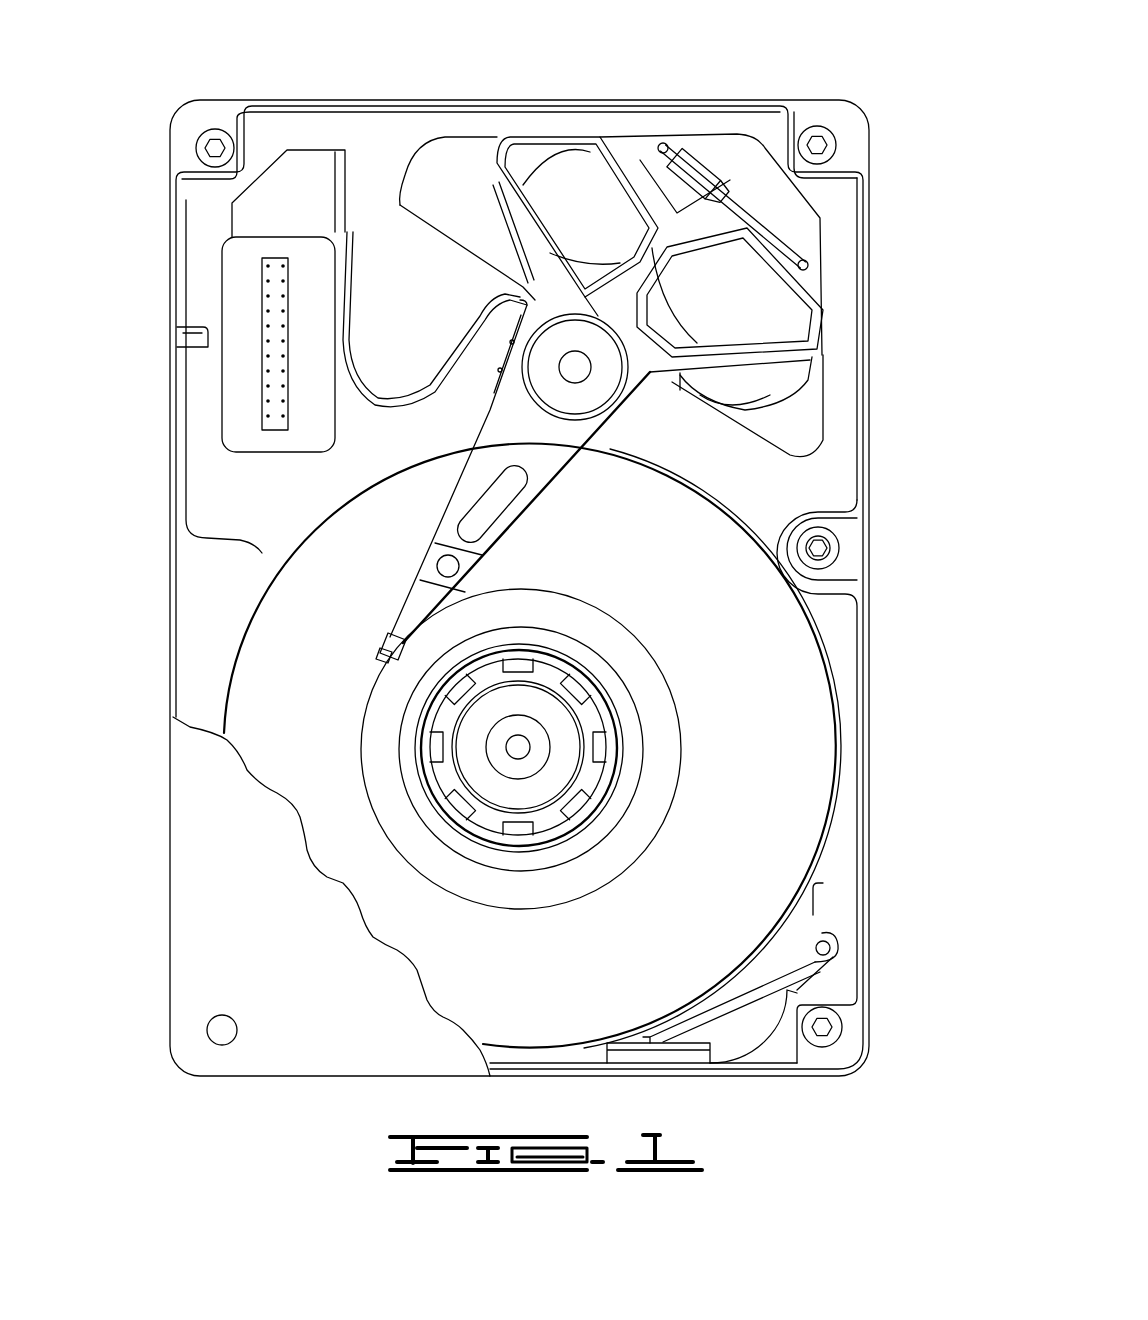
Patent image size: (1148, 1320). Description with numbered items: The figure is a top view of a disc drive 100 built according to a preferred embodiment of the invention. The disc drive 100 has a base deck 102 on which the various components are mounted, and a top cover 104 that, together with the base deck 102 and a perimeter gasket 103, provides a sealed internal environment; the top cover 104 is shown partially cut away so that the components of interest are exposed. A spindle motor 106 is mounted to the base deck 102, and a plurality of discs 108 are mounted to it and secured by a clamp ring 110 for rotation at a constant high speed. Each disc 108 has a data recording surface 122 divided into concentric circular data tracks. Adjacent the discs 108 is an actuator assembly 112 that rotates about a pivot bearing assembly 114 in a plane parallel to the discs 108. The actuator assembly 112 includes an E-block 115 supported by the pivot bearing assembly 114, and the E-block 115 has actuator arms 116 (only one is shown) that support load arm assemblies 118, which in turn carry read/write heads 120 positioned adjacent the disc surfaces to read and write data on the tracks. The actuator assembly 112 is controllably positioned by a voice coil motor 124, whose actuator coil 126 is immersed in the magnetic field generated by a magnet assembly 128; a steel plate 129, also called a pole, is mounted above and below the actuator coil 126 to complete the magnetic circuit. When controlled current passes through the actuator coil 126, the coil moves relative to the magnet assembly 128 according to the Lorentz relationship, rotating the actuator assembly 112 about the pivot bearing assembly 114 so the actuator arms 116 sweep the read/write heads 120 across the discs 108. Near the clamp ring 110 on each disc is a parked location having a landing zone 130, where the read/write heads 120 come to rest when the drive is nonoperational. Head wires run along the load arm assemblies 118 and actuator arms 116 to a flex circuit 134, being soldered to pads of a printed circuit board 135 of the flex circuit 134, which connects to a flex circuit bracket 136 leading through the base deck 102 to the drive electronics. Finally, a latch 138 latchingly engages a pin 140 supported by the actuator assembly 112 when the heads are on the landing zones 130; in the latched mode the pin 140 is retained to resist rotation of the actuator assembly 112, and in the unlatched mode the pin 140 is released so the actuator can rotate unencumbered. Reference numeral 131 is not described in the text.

The disc drive 100 is at (285, 80).
The base deck 102 is at (230, 470).
The perimeter gasket 103 is at (862, 375).
The top cover 104 is at (200, 872).
The spindle motor 106 is at (565, 738).
The discs 108 is at (808, 713).
The clamp ring 110 is at (468, 840).
The actuator assembly 112 is at (578, 460).
The pivot bearing assembly 114 is at (577, 362).
The E-block 115 is at (655, 378).
The actuator arms 116 is at (462, 531).
The load arm assemblies 118 is at (407, 617).
The read/write heads 120 is at (385, 652).
The data recording surface 122 is at (760, 832).
The voice coil motor 124 is at (567, 188).
The actuator coil 126 is at (637, 255).
The magnet assembly 128 is at (800, 393).
The steel plate 129 is at (415, 165).
The landing zone 130 is at (613, 653).
The latch engaging surface 131 is at (758, 385).
The flex circuit 134 is at (400, 407).
The printed circuit board 135 is at (490, 396).
The flex circuit bracket 136 is at (233, 296).
The latch 138 is at (778, 208).
The pin 140 is at (727, 187).